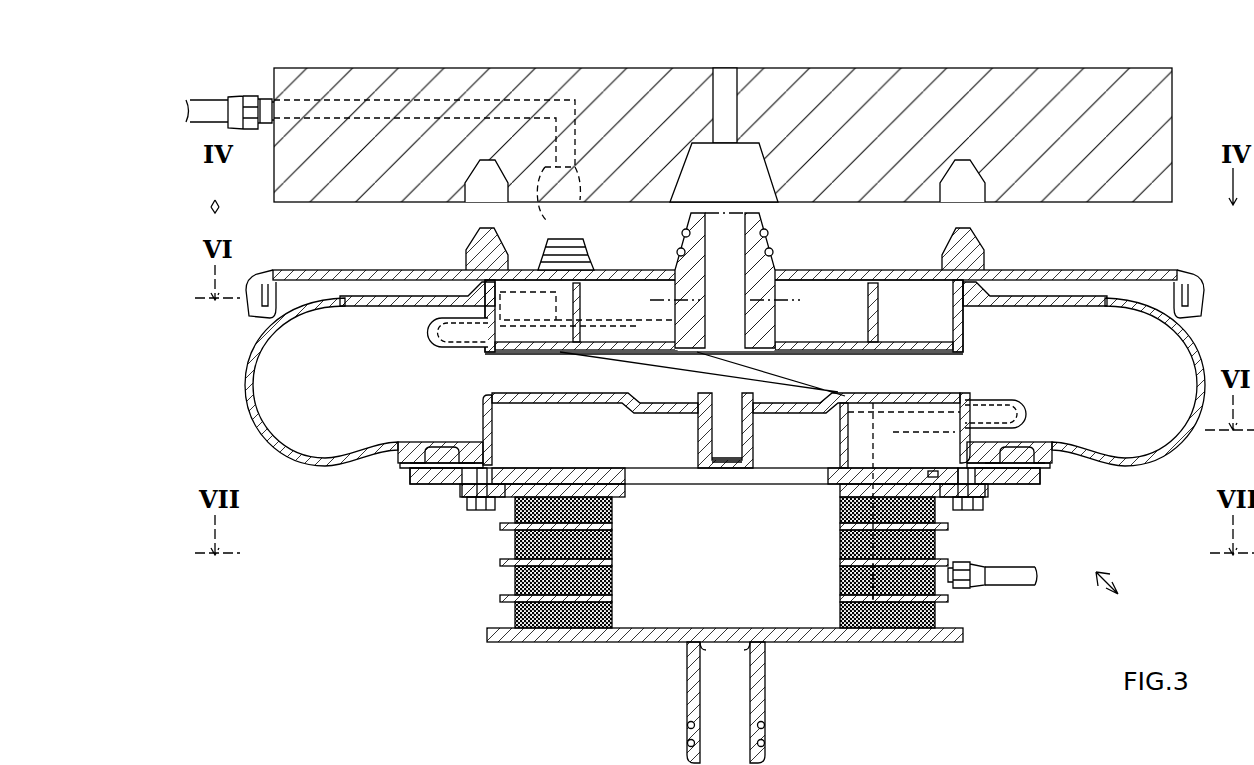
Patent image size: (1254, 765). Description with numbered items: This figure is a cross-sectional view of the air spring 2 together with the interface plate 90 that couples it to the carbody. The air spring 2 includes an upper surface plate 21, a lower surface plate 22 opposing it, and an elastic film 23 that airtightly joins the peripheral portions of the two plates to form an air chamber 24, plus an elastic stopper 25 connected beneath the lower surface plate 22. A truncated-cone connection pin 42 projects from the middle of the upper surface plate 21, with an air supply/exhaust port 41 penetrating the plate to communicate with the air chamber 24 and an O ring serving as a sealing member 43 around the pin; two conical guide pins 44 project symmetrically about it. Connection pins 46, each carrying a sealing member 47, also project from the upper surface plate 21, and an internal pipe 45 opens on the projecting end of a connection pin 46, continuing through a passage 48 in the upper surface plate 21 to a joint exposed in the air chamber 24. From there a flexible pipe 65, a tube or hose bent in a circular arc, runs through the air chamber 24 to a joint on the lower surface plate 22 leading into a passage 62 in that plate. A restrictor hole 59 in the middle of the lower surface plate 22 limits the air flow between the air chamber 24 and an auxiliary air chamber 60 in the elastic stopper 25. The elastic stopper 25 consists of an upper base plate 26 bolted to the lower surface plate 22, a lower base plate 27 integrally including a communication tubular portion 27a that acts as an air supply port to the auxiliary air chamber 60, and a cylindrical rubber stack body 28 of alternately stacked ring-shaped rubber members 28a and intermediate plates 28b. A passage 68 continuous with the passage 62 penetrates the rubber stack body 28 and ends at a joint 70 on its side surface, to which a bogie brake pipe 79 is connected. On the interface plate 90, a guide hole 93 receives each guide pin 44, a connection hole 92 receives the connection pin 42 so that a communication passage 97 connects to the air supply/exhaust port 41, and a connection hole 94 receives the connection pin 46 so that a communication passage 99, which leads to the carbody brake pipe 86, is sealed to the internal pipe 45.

The air spring 2 is at (1114, 590).
The upper surface plate 21 is at (1110, 268).
The lower surface plate 22 is at (412, 478).
The elastic film 23 is at (1145, 470).
The air chamber 24 is at (1117, 379).
The elastic stopper 25 is at (464, 628).
The upper base plate 26 is at (985, 500).
The lower base plate 27 is at (766, 700).
The communication tubular portion 27a is at (700, 680).
The rubber stack body 28 is at (670, 562).
The rubber member 28a is at (512, 545).
The intermediate plate 28b is at (505, 598).
The air supply/exhaust port 41 is at (735, 265).
The connection pin 42 is at (768, 233).
The sealing member 43 is at (773, 252).
The guide pin 44 is at (466, 250).
The internal pipe 45 is at (448, 360).
The connection pin 46 is at (583, 239).
The sealing member 47 is at (590, 250).
The passage 48 is at (548, 296).
The restrictor hole 59 is at (727, 470).
The auxiliary air chamber 60 is at (727, 607).
The passage 62 is at (945, 392).
The flexible pipe 65 is at (600, 368).
The passage 68 is at (935, 546).
The joint 70 is at (965, 590).
The bogie brake pipe 79 is at (1018, 587).
The carbody brake pipe 86 is at (228, 98).
The interface plate 90 is at (1172, 100).
The connection hole 92 is at (668, 200).
The guide hole 93 is at (470, 205).
The connection hole 94 is at (538, 208).
The communication passage 97 is at (737, 90).
The communication passage 99 is at (452, 100).